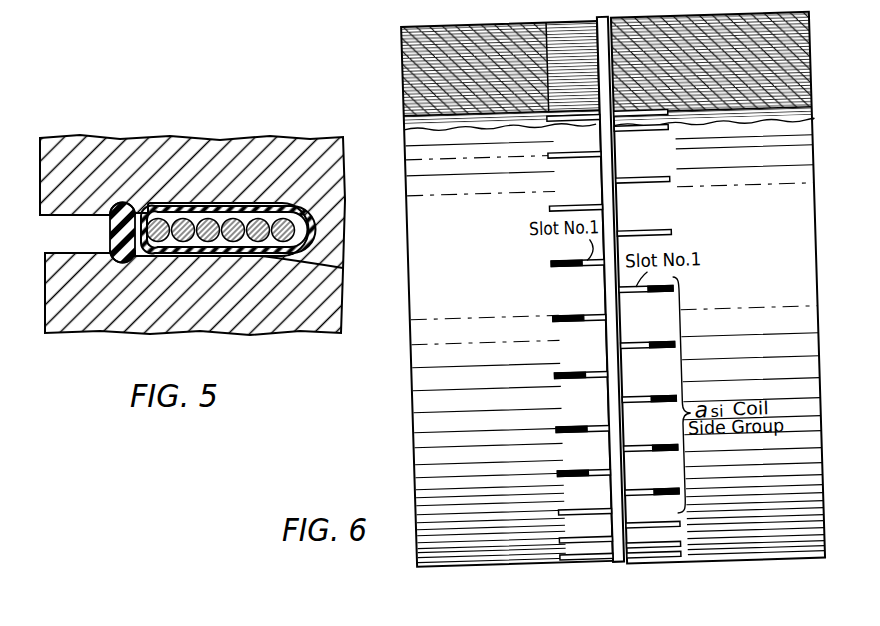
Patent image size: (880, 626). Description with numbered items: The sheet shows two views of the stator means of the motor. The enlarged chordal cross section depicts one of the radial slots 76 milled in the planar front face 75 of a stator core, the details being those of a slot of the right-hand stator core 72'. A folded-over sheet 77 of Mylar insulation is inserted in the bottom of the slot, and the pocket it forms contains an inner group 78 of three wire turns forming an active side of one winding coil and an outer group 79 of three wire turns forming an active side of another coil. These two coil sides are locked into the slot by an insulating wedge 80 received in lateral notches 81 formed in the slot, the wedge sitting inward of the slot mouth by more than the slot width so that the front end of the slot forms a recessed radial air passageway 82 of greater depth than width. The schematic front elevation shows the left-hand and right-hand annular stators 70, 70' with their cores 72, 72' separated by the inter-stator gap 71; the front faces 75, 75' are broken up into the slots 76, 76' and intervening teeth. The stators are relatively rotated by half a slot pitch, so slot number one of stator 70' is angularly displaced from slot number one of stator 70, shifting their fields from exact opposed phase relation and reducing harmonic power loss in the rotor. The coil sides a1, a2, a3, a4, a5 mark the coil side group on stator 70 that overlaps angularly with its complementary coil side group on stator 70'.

In FIG. 6, the left-hand annular stator 70 is at (485, 285).
In FIG. 6, the right-hand annular stator 70' is at (718, 281).
In FIG. 6, the inter-stator gap 71 is at (610, 281).
In FIG. 6, the stator core 72 is at (486, 351).
In FIG. 5, the right-hand stator core 72' is at (56, 346).
In FIG. 6, the right-hand stator core 72' is at (750, 345).
In FIG. 6, the front face 75 is at (594, 333).
In FIG. 5, the front face 75' is at (186, 217).
In FIG. 6, the front face 75' is at (648, 390).
In FIG. 6, the radial slots 76 is at (575, 338).
In FIG. 5, the radial slots 76' is at (45, 237).
In FIG. 6, the radial slots 76' is at (647, 334).
In FIG. 5, the folded-over sheet of insulation 77 is at (343, 268).
In FIG. 5, the inner group of wire turns 78 is at (262, 206).
In FIG. 5, the outer group of wire turns 79 is at (184, 206).
In FIG. 5, the insulating wedge 80 is at (116, 247).
In FIG. 5, the lateral notches 81 is at (118, 203).
In FIG. 5, the slot opening 82 is at (101, 251).
In FIG. 6, the coil side a1 is at (564, 260).
In FIG. 6, the coil side a2 is at (571, 314).
In FIG. 6, the coil side a3 is at (579, 371).
In FIG. 6, the coil side a4 is at (577, 425).
In FIG. 6, the coil side a5 is at (578, 469).